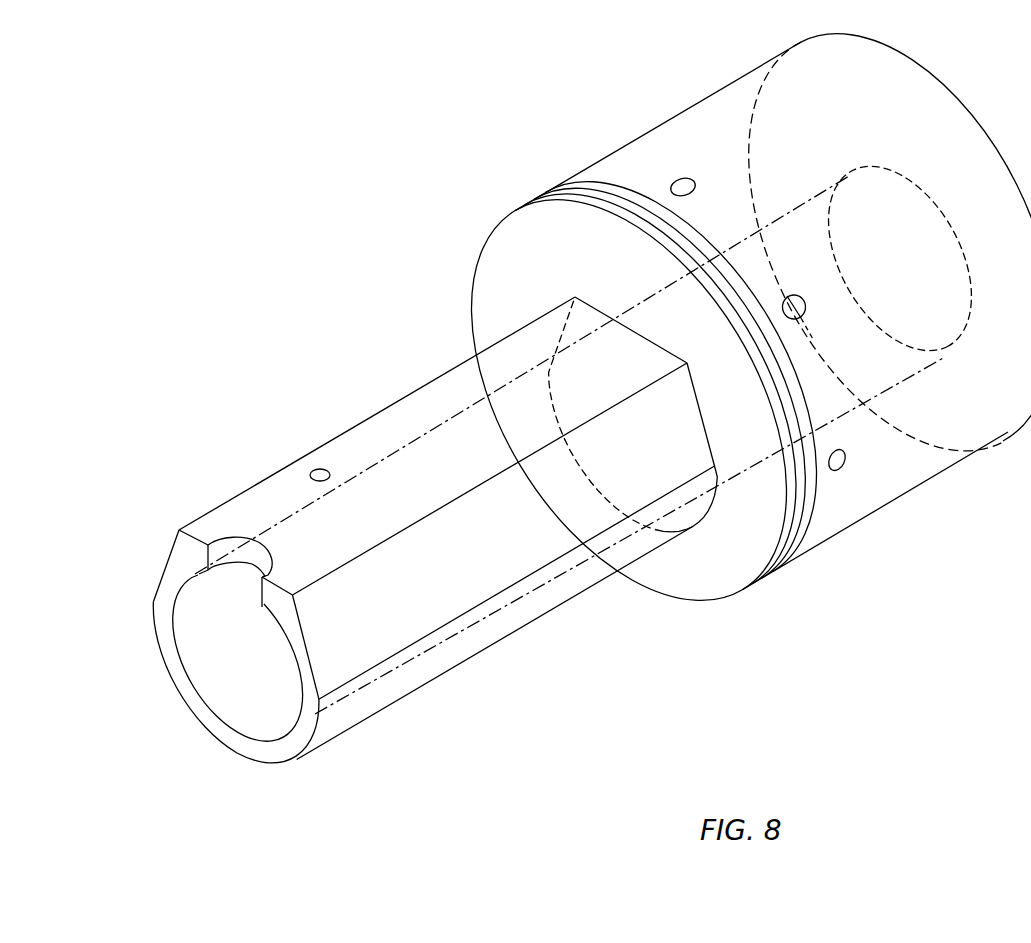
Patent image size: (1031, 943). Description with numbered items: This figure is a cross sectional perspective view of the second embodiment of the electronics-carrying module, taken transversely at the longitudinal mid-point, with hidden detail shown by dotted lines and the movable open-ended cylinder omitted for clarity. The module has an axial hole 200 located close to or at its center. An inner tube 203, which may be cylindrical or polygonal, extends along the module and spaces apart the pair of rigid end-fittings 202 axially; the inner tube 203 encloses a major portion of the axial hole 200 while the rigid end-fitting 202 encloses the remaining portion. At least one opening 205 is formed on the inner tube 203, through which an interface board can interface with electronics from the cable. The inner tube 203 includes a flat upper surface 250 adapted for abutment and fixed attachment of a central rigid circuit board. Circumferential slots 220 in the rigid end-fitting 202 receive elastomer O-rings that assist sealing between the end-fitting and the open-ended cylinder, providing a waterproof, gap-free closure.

The axial hole 200 is at (217, 673).
The rigid end-fitting 202 is at (687, 115).
The inner tube 203 is at (160, 613).
The opening 205 is at (232, 549).
The circumferential slot 220 is at (800, 477).
The flat upper surface 250 is at (383, 425).